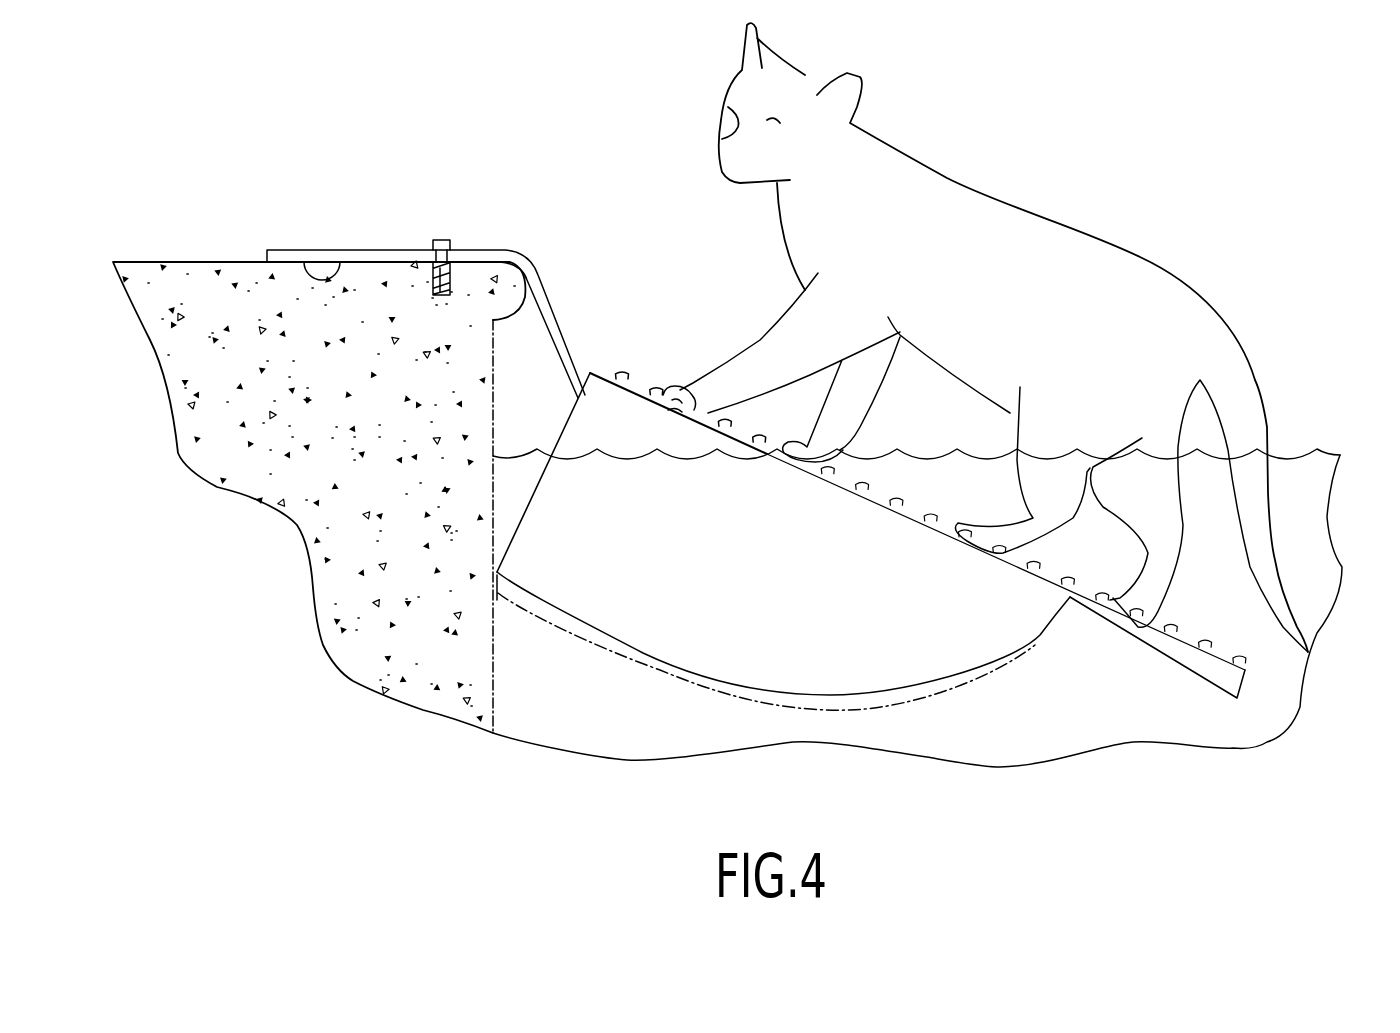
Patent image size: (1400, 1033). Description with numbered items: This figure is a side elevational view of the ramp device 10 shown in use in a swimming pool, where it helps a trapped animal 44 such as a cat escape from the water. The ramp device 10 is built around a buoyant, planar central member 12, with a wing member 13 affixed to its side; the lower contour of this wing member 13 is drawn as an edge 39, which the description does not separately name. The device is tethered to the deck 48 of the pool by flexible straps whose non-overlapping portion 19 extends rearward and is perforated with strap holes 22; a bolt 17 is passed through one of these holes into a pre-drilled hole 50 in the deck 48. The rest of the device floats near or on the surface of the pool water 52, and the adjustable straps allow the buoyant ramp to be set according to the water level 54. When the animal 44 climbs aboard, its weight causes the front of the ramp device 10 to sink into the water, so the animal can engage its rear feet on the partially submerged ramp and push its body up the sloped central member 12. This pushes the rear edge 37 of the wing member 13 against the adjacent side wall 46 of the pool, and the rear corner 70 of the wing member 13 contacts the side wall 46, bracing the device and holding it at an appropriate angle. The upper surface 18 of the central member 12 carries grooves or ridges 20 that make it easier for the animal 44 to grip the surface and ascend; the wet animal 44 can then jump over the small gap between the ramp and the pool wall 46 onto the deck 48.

The ramp device 10 is at (621, 153).
The central member 12 is at (1173, 658).
The wing member 13 is at (939, 526).
The bolt 17 is at (445, 242).
The upper surface 18 is at (648, 390).
The non-overlapping portion 19 is at (302, 264).
The grooves or ridges 20 is at (624, 382).
The strap holes 22 is at (433, 243).
The rear edge 37 is at (533, 497).
The ramp lower edge 39 is at (653, 662).
The animal 44 is at (992, 302).
The side wall 46 is at (493, 397).
The deck 48 is at (185, 262).
The pre-drilled holes 50 is at (453, 283).
The pool water 52 is at (917, 572).
The water level 54 is at (522, 452).
The rear corners 70 is at (498, 598).